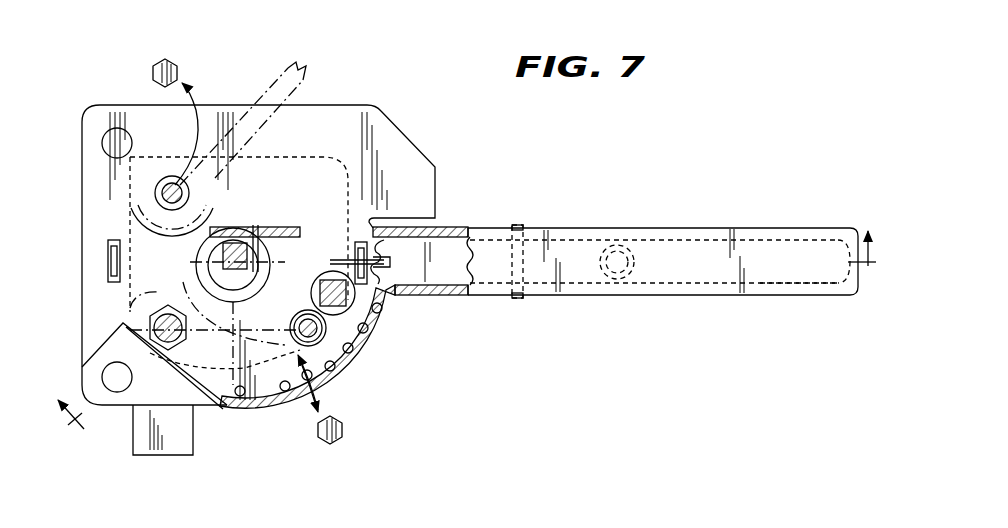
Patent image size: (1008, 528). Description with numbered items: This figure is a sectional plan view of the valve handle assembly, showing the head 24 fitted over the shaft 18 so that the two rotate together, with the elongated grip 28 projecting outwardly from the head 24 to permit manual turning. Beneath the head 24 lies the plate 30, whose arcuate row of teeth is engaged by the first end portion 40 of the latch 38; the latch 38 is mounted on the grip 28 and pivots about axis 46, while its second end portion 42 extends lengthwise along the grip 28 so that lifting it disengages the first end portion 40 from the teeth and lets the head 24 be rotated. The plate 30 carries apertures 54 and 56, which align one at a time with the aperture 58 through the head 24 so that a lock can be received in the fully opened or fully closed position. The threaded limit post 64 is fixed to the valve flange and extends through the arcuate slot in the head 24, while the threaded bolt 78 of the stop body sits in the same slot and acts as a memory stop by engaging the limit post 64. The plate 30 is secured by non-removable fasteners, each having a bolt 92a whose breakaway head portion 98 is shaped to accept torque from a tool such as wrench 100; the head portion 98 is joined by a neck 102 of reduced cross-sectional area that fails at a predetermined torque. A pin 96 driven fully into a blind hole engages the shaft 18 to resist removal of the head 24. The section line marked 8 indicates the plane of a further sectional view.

The section line 8- 8 is at (460, 312).
The shaft 18 is at (218, 252).
The head 24 is at (355, 355).
The elongated grip 28 is at (692, 232).
The plate 30 is at (336, 105).
The latch 38 is at (662, 277).
The first end portion 40 is at (400, 265).
The second end portion 42 is at (805, 277).
The axis 46 is at (517, 298).
The aperture 54 is at (120, 385).
The aperture 56 is at (127, 130).
The aperture 58 is at (118, 385).
The threaded limit post 64 is at (158, 327).
The threaded bolt 78 is at (345, 303).
The bolt 92a is at (160, 196).
The pin 96 is at (255, 230).
The breakaway head portion 98 is at (170, 65).
The wrench 100 is at (272, 87).
The neck 102 is at (145, 162).